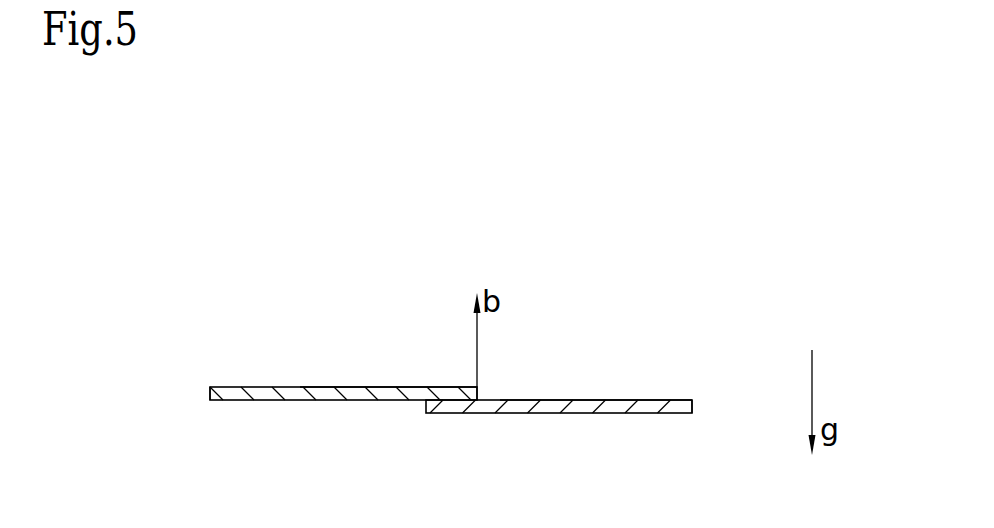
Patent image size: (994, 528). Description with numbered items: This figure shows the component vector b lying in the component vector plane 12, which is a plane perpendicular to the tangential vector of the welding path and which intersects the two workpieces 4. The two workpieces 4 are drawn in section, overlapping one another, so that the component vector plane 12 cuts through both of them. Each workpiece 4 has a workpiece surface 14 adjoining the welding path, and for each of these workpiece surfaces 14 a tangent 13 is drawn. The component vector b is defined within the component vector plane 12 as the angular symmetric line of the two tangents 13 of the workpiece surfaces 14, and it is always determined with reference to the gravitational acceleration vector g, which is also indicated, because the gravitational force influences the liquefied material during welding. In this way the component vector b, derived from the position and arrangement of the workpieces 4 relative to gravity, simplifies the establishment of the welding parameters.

The component vector plane 12 is at (416, 325).
The workpiece 4 is at (343, 400).
The tangent 13 is at (377, 388).
The workpiece surface 14 is at (294, 381).